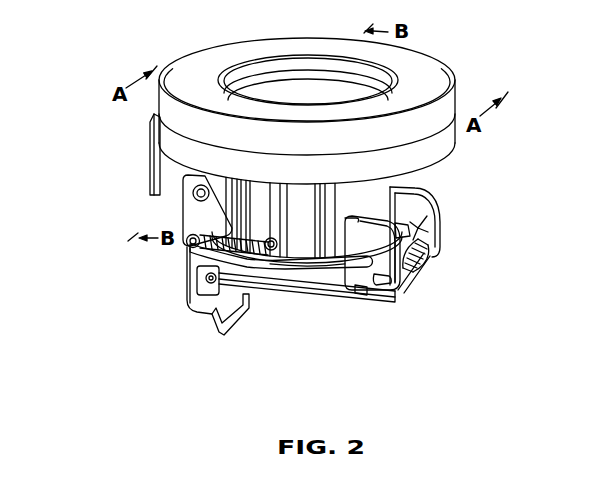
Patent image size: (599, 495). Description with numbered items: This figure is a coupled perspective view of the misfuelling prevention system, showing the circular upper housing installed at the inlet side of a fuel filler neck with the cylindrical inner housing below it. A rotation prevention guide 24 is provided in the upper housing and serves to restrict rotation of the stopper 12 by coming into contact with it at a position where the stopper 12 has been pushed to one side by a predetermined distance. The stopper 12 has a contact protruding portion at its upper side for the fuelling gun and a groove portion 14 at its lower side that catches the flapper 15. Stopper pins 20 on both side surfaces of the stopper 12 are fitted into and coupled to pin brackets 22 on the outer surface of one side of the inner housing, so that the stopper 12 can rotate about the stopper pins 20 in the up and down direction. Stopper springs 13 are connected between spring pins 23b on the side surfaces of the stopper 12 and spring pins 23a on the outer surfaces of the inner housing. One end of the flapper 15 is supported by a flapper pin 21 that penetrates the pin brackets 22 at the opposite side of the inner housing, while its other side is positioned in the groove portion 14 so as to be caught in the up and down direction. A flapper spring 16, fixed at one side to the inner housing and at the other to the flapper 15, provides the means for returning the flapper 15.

The stopper 12 is at (180, 285).
The stopper springs 13 is at (267, 280).
The groove portion 14 is at (210, 300).
The flapper 15 is at (320, 294).
The flapper spring 16 is at (432, 258).
The stopper pins 20 is at (180, 212).
The flapper pin 21 is at (400, 298).
The pin brackets 22 is at (189, 194).
The spring pins 23a is at (283, 281).
The spring pins 23b is at (190, 246).
The rotation prevention guide 24 is at (152, 172).